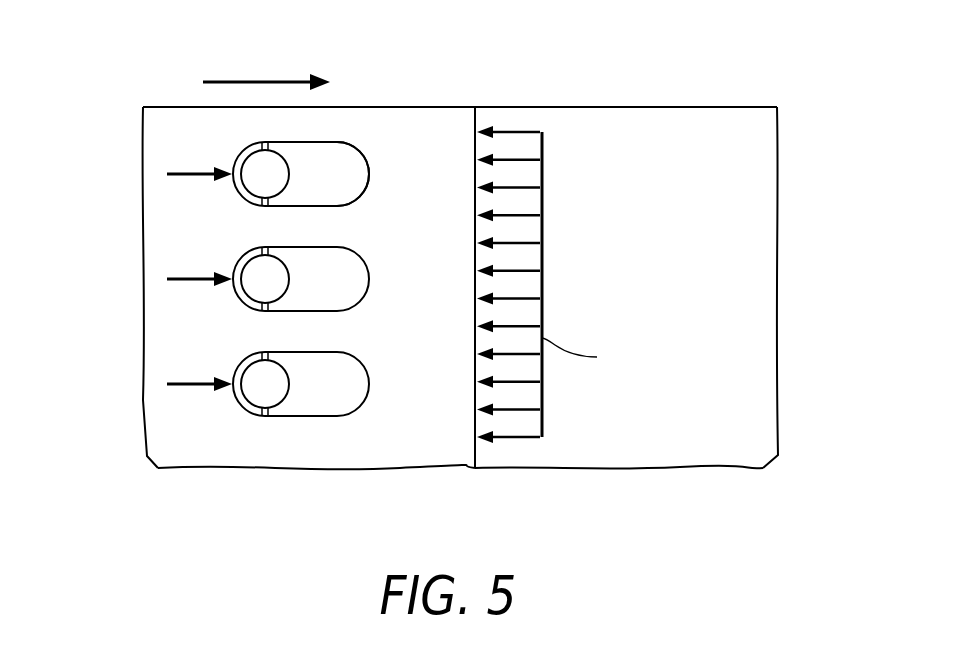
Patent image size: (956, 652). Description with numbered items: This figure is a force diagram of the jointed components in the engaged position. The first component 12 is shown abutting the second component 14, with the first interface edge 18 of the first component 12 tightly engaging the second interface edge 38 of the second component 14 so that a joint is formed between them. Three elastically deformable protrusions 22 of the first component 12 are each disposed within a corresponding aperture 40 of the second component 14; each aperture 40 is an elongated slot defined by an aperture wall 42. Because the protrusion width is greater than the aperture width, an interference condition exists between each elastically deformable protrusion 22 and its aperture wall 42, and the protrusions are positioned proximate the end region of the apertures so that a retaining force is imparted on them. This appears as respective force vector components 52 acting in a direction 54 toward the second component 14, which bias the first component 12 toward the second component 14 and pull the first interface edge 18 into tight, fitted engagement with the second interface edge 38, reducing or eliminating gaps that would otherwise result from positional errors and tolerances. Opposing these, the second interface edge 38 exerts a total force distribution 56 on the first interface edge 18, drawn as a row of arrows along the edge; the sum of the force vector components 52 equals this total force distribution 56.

The first component 12 is at (165, 447).
The second component 14 is at (750, 150).
The first interface edge 18 is at (478, 452).
The elastically deformable protrusion 22 is at (288, 158).
The second interface edge 38 is at (474, 120).
The aperture 40 is at (348, 162).
The aperture wall 42 is at (329, 204).
The force vector component 52 is at (190, 380).
The direction 54 is at (261, 80).
The total force distribution 56 is at (528, 278).